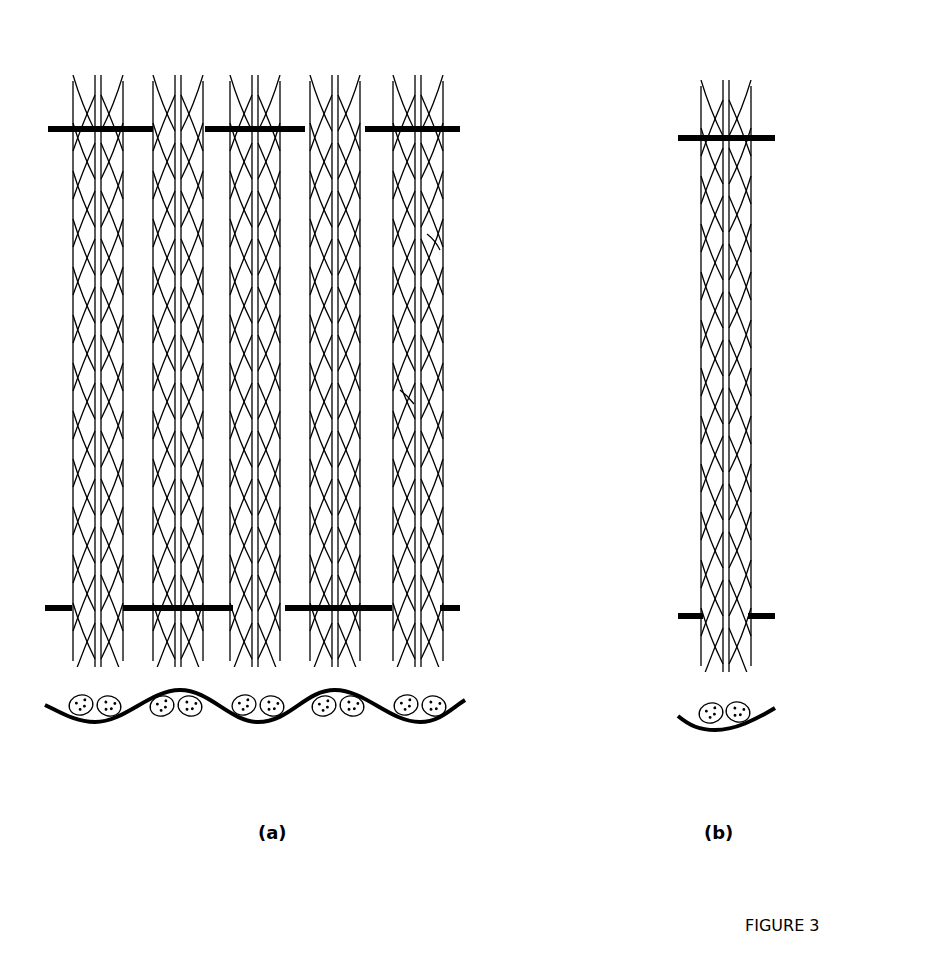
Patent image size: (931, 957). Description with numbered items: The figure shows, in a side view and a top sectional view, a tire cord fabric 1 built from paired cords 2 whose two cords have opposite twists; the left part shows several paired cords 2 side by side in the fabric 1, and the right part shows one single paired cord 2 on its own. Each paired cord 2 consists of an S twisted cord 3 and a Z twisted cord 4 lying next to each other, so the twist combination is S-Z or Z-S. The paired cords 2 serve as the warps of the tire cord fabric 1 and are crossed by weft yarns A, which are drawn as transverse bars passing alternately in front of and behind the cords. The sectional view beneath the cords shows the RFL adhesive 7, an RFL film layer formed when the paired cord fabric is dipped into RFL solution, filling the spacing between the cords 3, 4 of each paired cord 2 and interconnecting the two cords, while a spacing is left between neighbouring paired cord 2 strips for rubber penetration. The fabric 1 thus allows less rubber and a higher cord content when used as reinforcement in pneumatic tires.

The tire cord fabric 1 is at (505, 104).
The paired cord 2 is at (131, 63).
The S twisted cord 3 is at (712, 410).
The Z twisted cord 4 is at (738, 253).
The weft yarns A is at (678, 140).
The RFL adhesive 7 is at (455, 608).